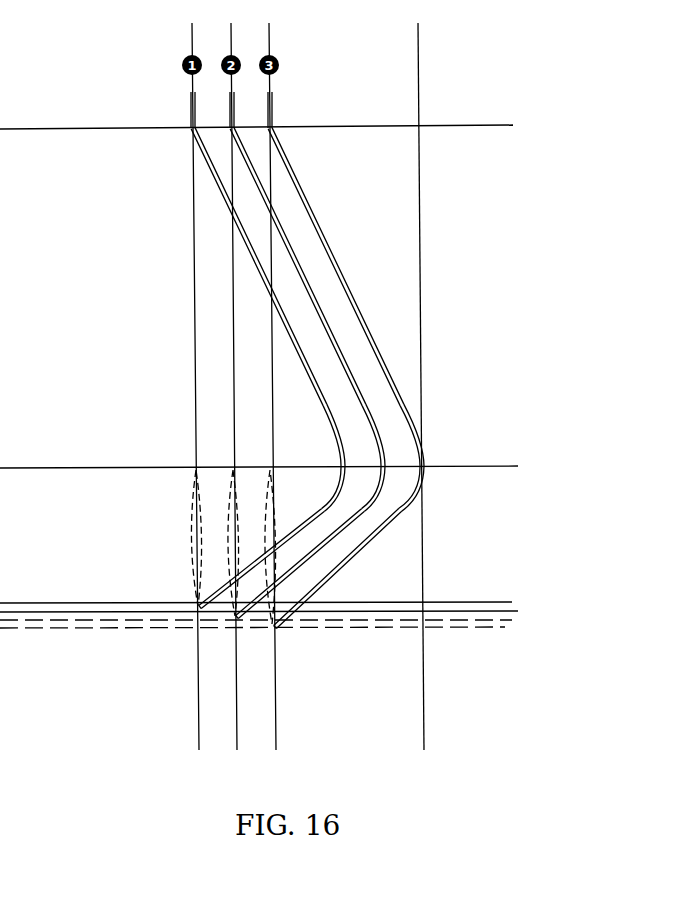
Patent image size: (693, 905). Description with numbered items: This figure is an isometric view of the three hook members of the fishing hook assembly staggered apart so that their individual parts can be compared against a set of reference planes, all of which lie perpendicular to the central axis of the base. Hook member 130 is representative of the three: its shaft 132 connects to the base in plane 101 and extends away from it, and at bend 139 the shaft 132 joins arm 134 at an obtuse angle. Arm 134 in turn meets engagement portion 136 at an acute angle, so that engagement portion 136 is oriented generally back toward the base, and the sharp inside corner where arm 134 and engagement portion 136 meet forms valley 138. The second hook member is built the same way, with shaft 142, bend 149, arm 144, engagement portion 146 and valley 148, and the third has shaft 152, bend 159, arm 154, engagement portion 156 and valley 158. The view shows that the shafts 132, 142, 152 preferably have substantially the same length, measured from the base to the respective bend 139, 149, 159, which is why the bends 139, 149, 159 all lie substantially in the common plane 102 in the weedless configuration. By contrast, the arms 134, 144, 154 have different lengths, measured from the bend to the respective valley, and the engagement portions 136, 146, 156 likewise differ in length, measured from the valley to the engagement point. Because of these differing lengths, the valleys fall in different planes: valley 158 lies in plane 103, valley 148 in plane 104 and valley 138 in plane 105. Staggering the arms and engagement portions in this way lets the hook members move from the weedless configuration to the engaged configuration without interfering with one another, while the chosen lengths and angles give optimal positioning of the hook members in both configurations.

The plane 101 is at (284, 126).
The plane 102 is at (286, 463).
The plane 103 is at (512, 601).
The plane 104 is at (518, 611).
The plane 105 is at (515, 621).
The hook member 130 is at (400, 297).
The shaft 132 is at (328, 237).
The arm 134 is at (368, 546).
The engagement portion 136 is at (262, 528).
The valley 138 is at (290, 623).
The bend 139 is at (421, 466).
The shaft 142 is at (273, 225).
The arm 144 is at (360, 517).
The engagement portion 146 is at (222, 505).
The valley 148 is at (250, 625).
The bend 149 is at (382, 466).
The shaft 152 is at (225, 205).
The arm 154 is at (303, 535).
The engagement portion 156 is at (187, 555).
The valley 158 is at (200, 630).
The bend 159 is at (340, 466).